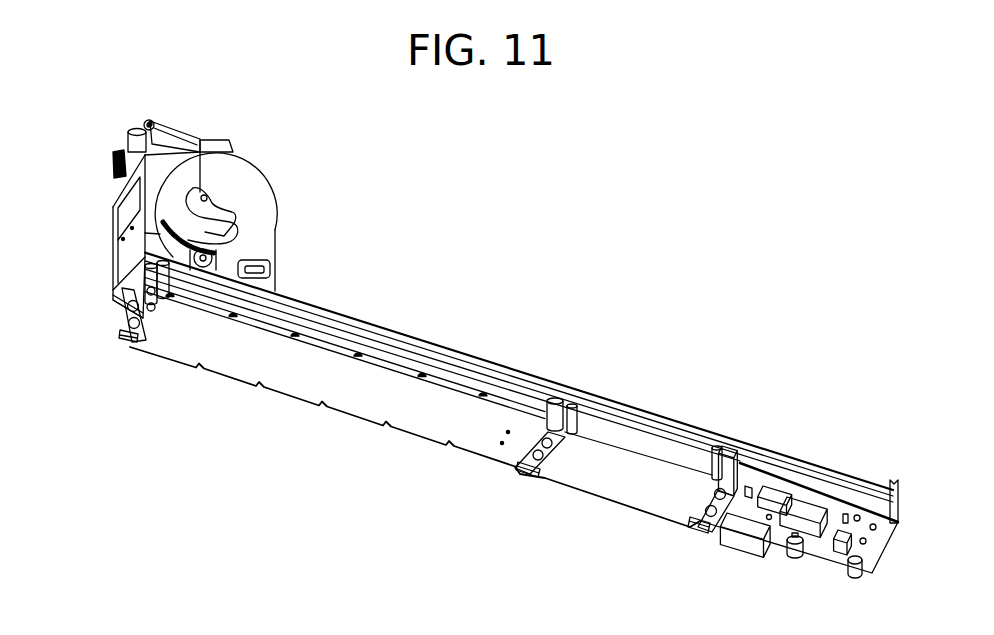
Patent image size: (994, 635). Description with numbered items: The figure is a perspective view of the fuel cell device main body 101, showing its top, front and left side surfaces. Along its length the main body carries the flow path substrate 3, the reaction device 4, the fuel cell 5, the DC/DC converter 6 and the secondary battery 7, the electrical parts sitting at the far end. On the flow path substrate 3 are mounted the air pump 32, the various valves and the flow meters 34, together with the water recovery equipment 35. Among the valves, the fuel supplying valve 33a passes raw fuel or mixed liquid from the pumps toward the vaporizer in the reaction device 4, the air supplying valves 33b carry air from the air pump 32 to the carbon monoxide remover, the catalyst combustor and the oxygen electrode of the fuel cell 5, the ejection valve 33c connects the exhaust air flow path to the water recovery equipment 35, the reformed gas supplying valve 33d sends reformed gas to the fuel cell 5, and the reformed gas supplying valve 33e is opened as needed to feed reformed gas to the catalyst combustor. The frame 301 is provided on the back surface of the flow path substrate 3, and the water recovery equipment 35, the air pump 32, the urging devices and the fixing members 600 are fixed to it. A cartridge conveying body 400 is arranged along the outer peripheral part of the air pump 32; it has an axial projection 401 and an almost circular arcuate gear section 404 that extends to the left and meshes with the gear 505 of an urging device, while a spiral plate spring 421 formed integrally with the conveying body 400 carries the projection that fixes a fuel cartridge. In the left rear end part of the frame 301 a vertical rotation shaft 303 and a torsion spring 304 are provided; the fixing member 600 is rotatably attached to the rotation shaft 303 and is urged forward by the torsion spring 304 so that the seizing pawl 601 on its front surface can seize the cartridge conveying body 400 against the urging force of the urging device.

The fuel cell device main body 101 is at (835, 257).
The flow path substrate 3 is at (118, 306).
The reaction device 4 is at (647, 510).
The fuel cell 5 is at (412, 428).
The DC/DC converter 6 is at (807, 541).
The secondary battery 7 is at (827, 487).
The air pump 32 is at (167, 202).
The fuel supplying valve 33a is at (725, 447).
The air supplying valve 33b is at (133, 347).
The ejection valve 33c is at (158, 310).
The reformed gas supplying valve 33d is at (553, 395).
The reformed gas supplying valve 33e is at (535, 440).
The flow meter 34 is at (127, 338).
The water recovery equipment 35 is at (120, 285).
The frame 301 is at (112, 262).
The rotation shaft 303 is at (149, 122).
The torsion spring 304 is at (127, 145).
The cartridge conveying body 400 is at (245, 178).
The axial projection 401 is at (207, 195).
The gear section 404 is at (198, 238).
The plate spring 421 is at (272, 272).
The gear 505 is at (213, 257).
The fixing member 600 is at (186, 133).
The seizing pawl 601 is at (144, 127).